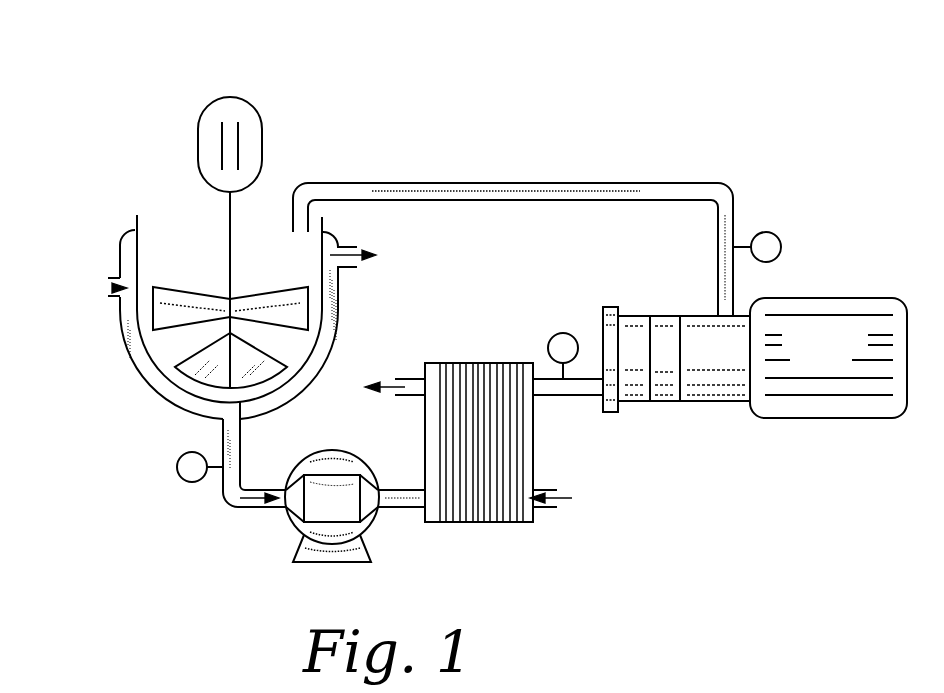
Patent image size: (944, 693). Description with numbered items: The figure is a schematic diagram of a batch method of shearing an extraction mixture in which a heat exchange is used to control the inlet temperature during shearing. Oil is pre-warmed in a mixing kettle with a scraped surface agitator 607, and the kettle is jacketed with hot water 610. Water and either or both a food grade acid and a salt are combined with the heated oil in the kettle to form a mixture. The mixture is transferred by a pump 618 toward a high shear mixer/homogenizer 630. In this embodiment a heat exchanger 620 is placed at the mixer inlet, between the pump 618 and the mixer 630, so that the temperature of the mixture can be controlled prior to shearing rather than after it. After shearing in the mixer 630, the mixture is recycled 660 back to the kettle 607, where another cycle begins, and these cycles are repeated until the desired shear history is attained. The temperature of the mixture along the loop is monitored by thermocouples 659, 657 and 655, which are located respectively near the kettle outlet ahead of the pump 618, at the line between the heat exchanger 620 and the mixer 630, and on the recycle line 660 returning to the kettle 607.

The mixing kettle with scraped surface agitator 607 is at (227, 271).
The hot water jacket 610 is at (113, 288).
The pump 618 is at (316, 520).
The heat exchanger 620 is at (495, 452).
The high shear mixer/homogenizer 630 is at (809, 376).
The thermocouple 655 is at (756, 232).
The thermocouple 657 is at (579, 311).
The thermocouple 659 is at (192, 451).
The recycle line 660 is at (532, 183).